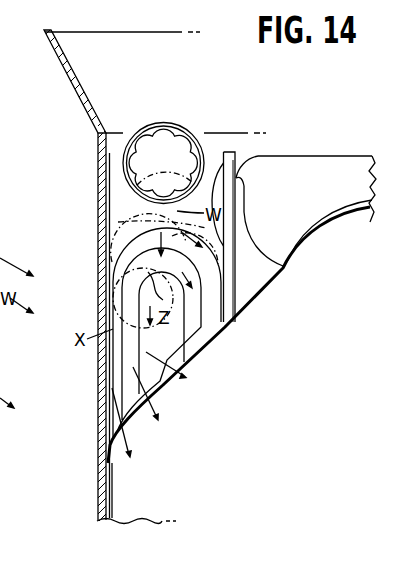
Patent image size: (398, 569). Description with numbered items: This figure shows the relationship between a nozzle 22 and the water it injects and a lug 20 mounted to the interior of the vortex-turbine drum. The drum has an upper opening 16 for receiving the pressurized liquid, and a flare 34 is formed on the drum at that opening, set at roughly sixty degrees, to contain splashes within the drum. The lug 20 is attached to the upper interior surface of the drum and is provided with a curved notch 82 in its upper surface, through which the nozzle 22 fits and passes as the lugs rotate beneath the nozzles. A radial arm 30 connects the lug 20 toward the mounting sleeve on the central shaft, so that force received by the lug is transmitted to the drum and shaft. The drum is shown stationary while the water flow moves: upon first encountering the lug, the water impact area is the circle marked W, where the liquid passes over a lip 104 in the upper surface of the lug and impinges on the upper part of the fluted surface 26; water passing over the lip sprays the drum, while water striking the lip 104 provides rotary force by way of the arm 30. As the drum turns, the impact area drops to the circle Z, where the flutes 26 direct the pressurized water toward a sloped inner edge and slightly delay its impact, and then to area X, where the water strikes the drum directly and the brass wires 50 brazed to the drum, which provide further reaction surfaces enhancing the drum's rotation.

The flare 34 is at (60, 64).
The upper opening 16 is at (98, 134).
The nozzle 22 is at (161, 123).
The curved notch 82 is at (222, 152).
The radial arm 30 is at (330, 160).
The lip 104 is at (128, 198).
The lug 20 is at (248, 296).
The fluted surface 26 is at (196, 336).
The wires 50 is at (111, 493).